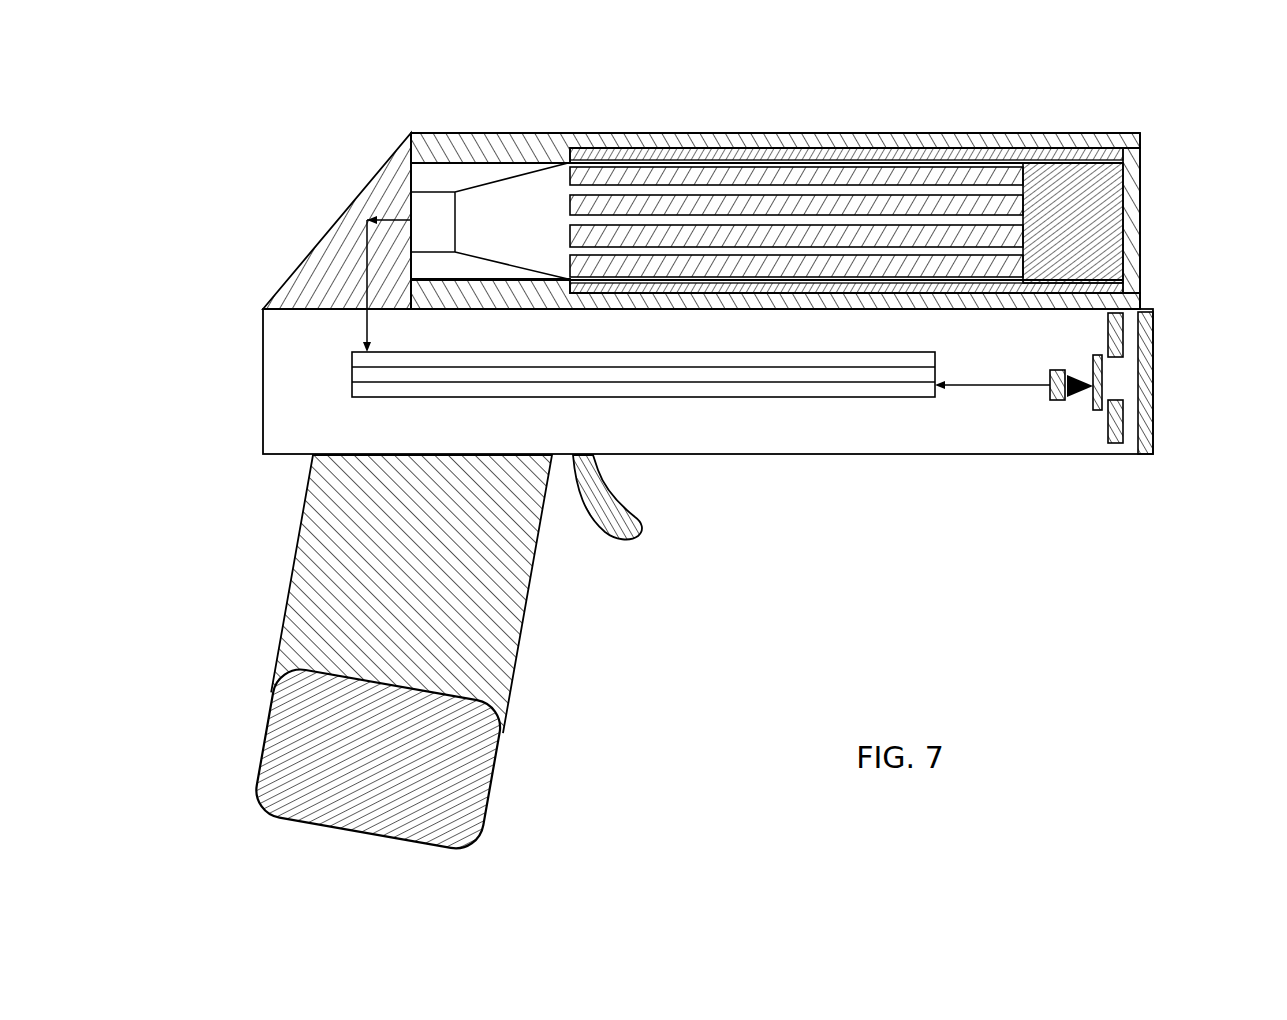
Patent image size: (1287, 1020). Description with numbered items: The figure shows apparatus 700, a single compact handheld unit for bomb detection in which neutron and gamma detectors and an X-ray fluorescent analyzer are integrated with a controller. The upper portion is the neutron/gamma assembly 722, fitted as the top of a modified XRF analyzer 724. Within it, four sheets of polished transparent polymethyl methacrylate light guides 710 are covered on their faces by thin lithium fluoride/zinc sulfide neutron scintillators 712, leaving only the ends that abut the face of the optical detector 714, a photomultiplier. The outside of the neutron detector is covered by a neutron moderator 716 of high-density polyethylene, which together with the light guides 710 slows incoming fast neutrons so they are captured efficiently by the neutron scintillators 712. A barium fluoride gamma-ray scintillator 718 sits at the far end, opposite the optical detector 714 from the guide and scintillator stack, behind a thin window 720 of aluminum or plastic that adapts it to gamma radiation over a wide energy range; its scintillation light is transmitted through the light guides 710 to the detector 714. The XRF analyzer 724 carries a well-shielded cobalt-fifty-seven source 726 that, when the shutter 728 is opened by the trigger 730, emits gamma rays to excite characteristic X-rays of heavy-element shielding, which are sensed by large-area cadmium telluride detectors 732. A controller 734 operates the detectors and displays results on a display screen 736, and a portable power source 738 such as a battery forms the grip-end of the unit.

The apparatus 700 is at (271, 110).
The light guides 710 is at (868, 245).
The neutron scintillators 712 is at (690, 250).
The optical detector 714 is at (531, 186).
The neutron moderator 716 is at (965, 141).
The gamma-ray scintillator 718 is at (1056, 165).
The thin window 720 is at (1140, 176).
The neutron/gamma assembly 722 is at (1158, 237).
The XRF analyzer 724 is at (1190, 387).
The 57Co source 726 is at (1050, 401).
The shutter 728 is at (1095, 412).
The trigger 730 is at (624, 533).
The CdTe detectors 732 is at (1124, 333).
The controller 734 is at (680, 398).
The display screen 736 is at (352, 203).
The portable power source 738 is at (477, 752).